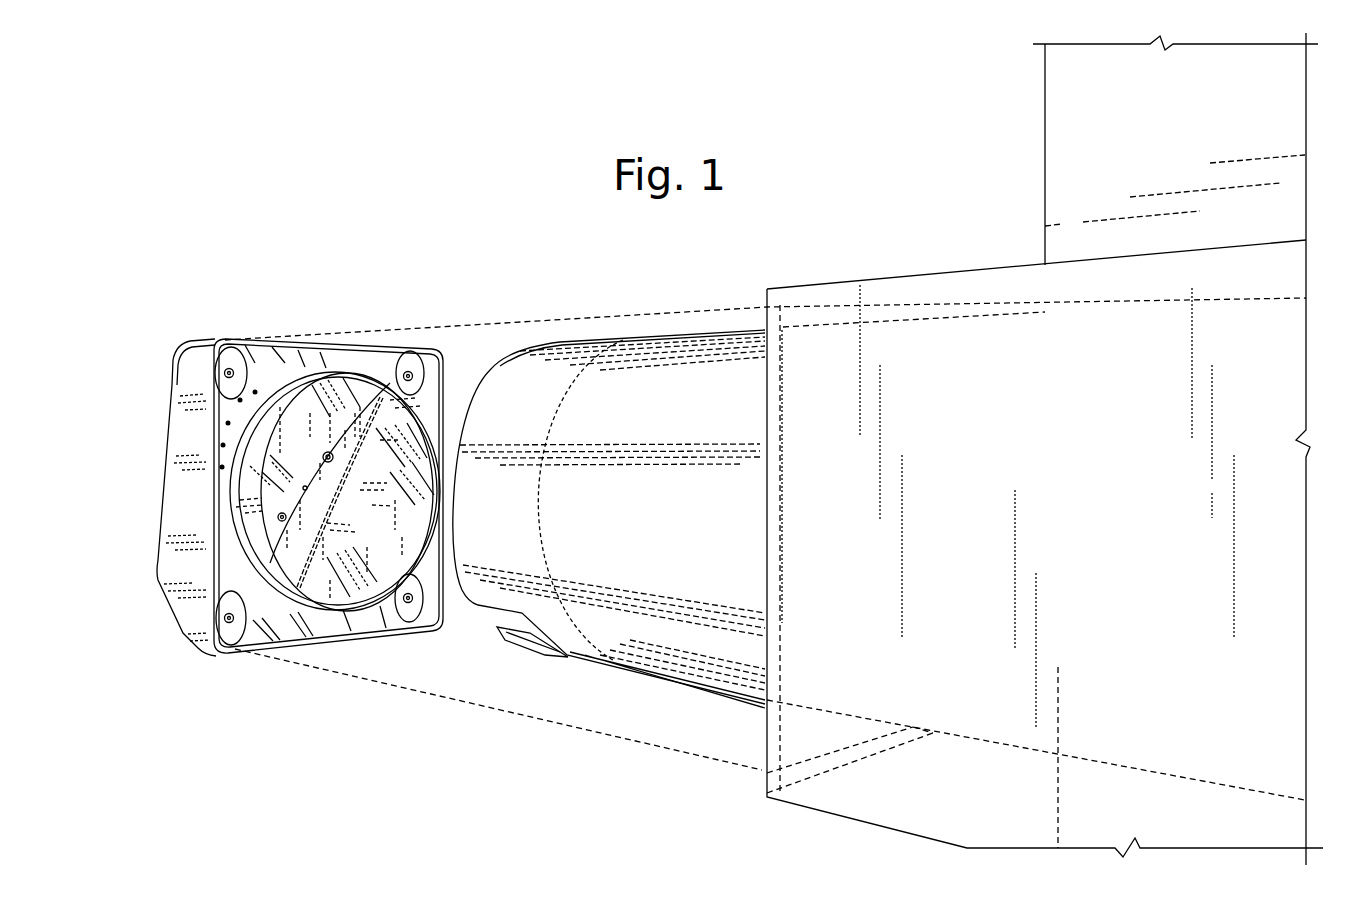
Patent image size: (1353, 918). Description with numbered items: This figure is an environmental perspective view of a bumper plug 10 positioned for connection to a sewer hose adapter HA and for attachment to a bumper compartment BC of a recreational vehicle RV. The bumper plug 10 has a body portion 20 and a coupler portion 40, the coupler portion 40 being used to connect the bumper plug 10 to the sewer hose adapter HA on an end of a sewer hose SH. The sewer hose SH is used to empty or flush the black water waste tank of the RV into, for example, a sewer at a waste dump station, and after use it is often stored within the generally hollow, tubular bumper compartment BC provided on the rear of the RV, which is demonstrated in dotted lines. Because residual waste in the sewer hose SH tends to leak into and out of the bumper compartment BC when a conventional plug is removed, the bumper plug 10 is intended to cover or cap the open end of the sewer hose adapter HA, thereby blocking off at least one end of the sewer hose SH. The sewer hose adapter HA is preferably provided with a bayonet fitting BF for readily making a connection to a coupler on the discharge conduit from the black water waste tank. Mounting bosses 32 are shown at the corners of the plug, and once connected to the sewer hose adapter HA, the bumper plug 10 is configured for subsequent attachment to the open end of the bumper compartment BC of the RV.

The bumper plug 10 is at (311, 296).
The body portion 20 is at (166, 381).
The mounting bosses 32 is at (229, 346).
The coupler portion 40 is at (333, 486).
The sewer hose adapter HA is at (512, 514).
The sewer hose SH is at (672, 514).
The bayonet fitting BF is at (492, 629).
The bumper compartment BC is at (1095, 546).
The recreational vehicle RV is at (1186, 142).